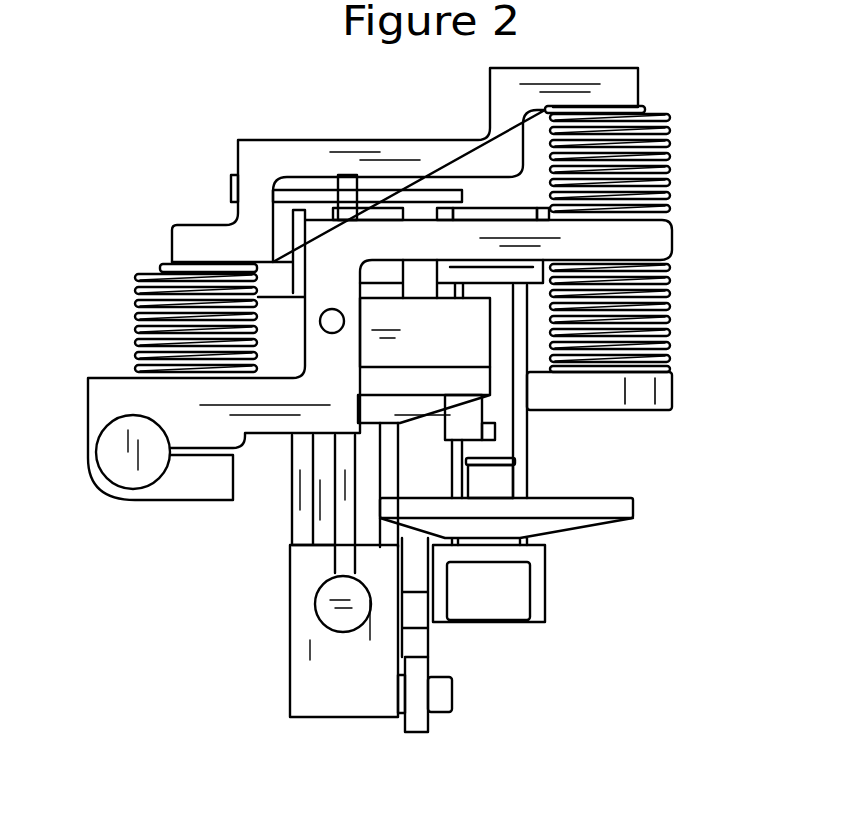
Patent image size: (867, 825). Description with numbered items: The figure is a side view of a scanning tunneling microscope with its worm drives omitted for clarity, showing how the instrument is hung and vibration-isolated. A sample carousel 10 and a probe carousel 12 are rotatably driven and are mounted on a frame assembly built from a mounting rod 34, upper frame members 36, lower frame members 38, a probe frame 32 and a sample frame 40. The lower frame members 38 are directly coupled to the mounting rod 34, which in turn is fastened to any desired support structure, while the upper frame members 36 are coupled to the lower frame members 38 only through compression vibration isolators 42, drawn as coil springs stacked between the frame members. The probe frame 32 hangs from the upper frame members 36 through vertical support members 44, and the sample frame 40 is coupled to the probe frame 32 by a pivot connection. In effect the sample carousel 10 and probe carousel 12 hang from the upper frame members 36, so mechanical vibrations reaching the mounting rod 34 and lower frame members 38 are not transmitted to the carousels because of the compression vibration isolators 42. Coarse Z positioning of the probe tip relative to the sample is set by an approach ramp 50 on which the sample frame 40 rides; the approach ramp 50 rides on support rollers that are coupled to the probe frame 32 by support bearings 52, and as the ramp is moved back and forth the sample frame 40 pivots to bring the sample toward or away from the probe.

The sample carousel 10 is at (602, 527).
The probe carousel 12 is at (442, 348).
The probe frame 32 is at (308, 717).
The mounting rod 34 is at (113, 462).
The upper frame members 36 is at (392, 157).
The lower frame members 38 is at (267, 423).
The sample frame 40 is at (540, 593).
The compression vibration isolators 42 is at (672, 293).
The vertical support members 44 is at (343, 563).
The approach ramp 50 is at (430, 635).
The support bearings 52 is at (415, 732).